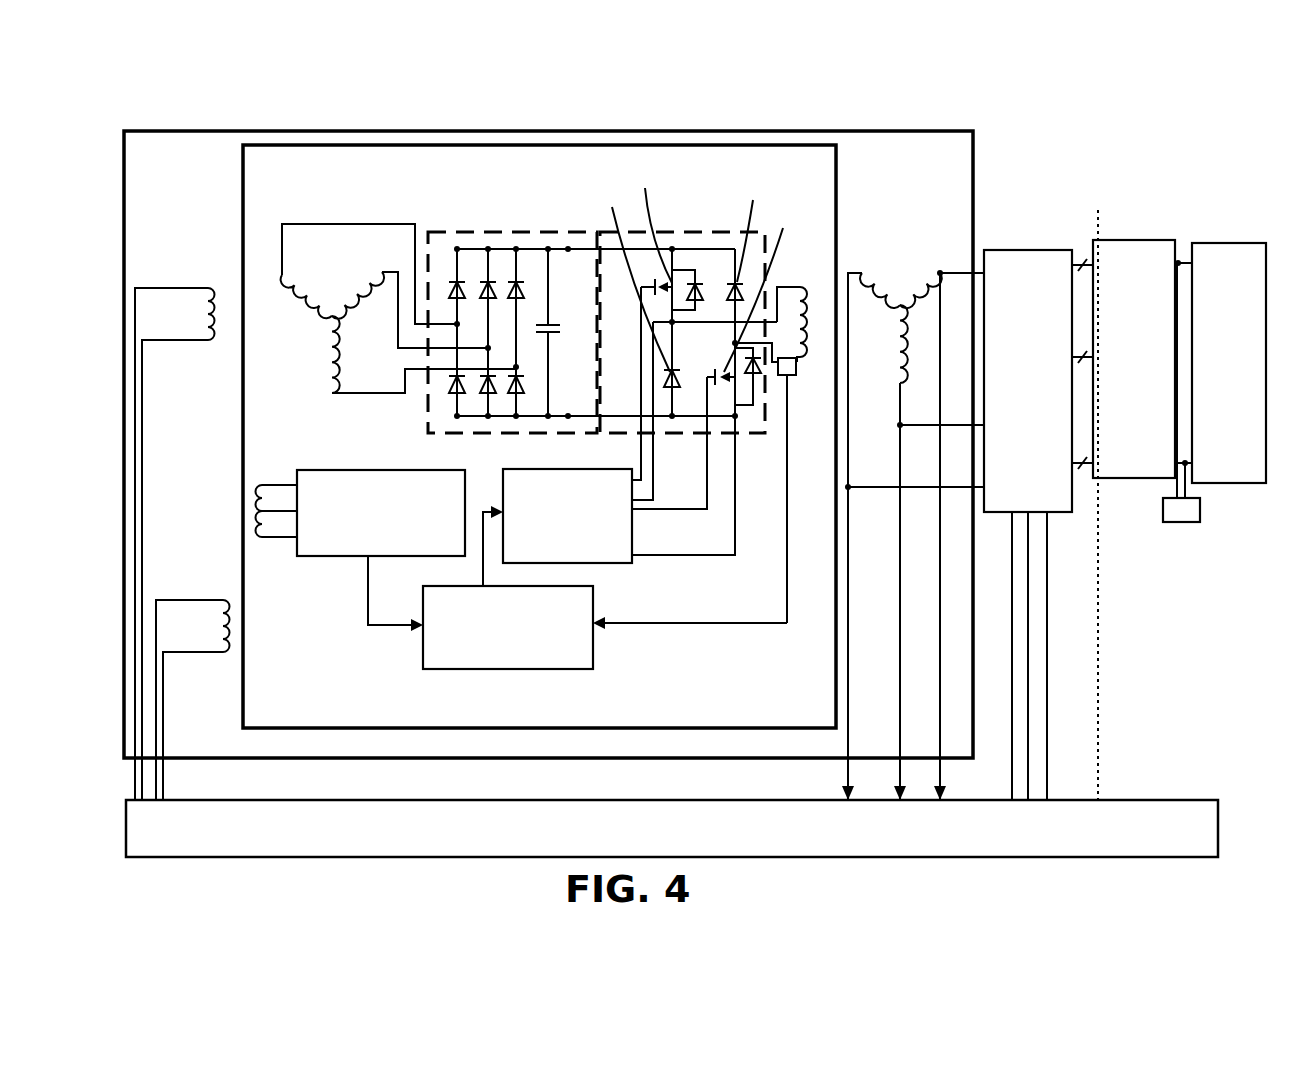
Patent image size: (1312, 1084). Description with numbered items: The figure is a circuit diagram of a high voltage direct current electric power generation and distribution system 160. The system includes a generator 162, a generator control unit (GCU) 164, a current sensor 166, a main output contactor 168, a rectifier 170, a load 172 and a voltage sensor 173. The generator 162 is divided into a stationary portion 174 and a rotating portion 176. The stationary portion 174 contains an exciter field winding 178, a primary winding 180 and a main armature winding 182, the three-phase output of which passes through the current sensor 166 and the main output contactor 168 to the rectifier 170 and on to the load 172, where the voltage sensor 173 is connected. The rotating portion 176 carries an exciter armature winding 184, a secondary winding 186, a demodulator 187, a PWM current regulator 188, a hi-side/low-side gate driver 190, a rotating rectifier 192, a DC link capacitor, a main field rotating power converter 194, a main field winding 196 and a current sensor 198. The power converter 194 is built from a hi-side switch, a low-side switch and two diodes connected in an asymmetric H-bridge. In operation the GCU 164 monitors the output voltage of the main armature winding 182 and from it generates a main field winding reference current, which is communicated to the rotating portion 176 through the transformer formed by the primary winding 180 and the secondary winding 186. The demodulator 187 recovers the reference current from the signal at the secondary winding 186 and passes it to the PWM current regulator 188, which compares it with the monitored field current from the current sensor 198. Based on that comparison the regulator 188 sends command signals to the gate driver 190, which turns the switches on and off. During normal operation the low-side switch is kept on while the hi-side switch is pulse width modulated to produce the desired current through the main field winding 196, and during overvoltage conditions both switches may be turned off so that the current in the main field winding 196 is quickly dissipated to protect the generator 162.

The HVDC electric power generation and distribution system 160 is at (193, 99).
The generator 162 is at (304, 122).
The generator control unit (GCU) 164 is at (1218, 838).
The current sensor 166 is at (1000, 250).
The main output contactor 168 is at (1081, 200).
The rectifier 170 is at (1106, 240).
The load 172 is at (1206, 243).
The voltage sensor 173 is at (1163, 508).
The stationary portion 174 is at (188, 186).
The rotating portion 176 is at (512, 311).
The exciter field winding 178 is at (207, 342).
The primary winding 180 is at (224, 600).
The main armature winding 182 is at (920, 300).
The exciter armature winding 184 is at (350, 295).
The secondary winding 186 is at (258, 485).
The demodulator 187 is at (340, 556).
The PWM current regulator 188 is at (593, 669).
The hi-side/low-side gate driver 190 is at (540, 469).
The rotating rectifier 192 is at (512, 232).
The main field rotating power converter 194 is at (761, 438).
The main field winding 196 is at (804, 290).
The current sensor 198 is at (798, 370).